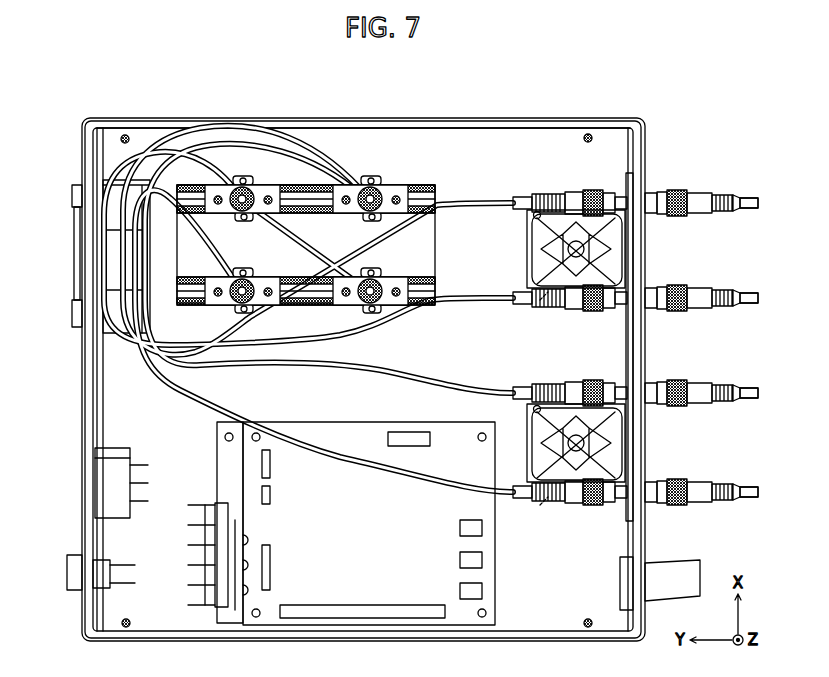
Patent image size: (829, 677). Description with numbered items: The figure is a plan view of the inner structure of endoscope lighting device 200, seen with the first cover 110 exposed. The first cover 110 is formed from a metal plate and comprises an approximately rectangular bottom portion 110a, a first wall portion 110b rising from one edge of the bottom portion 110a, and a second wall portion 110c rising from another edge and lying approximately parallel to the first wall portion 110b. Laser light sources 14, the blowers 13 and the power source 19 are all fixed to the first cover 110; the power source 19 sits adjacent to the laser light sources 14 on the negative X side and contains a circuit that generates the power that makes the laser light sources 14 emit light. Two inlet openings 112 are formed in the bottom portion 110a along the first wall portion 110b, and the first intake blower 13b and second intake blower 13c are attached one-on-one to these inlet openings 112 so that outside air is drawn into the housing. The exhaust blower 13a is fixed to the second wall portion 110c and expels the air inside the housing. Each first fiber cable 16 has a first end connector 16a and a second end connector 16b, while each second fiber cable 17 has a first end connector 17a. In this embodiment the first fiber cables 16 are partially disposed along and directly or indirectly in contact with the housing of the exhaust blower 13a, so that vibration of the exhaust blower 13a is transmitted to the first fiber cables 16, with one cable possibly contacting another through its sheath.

The endoscope lighting device 200 is at (662, 105).
The first cover 110 is at (580, 120).
The bottom portion 110a is at (486, 136).
The first wall portion 110b is at (648, 140).
The second wall portion 110c is at (84, 142).
The blowers 13 is at (122, 260).
The exhaust blower 13a is at (147, 292).
The first intake blower 13b is at (526, 252).
The second intake blower 13c is at (522, 467).
The laser light sources 14 is at (280, 187).
The first fiber cables 16 is at (242, 181).
The first end connector 16a is at (254, 194).
The second end connector 16b is at (570, 192).
The second fiber cables 17 is at (751, 190).
The first end connector 17a is at (700, 190).
The power source 19 is at (341, 529).
The inlet openings 112 is at (543, 304).